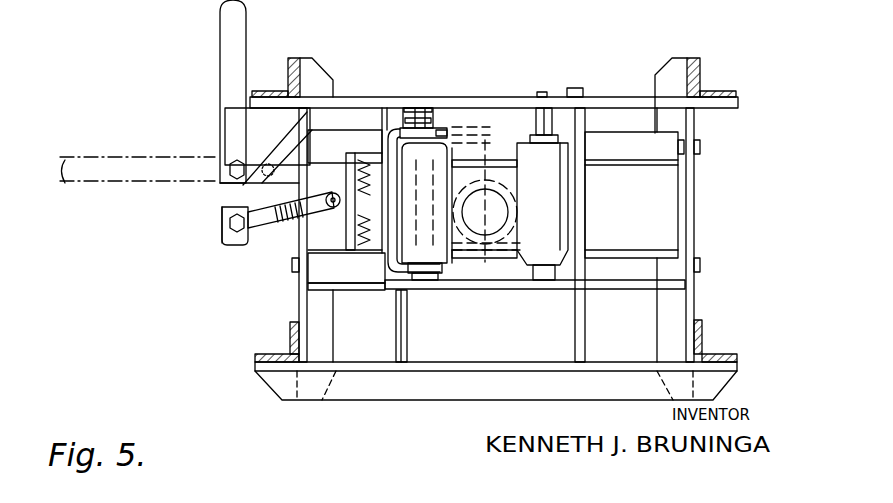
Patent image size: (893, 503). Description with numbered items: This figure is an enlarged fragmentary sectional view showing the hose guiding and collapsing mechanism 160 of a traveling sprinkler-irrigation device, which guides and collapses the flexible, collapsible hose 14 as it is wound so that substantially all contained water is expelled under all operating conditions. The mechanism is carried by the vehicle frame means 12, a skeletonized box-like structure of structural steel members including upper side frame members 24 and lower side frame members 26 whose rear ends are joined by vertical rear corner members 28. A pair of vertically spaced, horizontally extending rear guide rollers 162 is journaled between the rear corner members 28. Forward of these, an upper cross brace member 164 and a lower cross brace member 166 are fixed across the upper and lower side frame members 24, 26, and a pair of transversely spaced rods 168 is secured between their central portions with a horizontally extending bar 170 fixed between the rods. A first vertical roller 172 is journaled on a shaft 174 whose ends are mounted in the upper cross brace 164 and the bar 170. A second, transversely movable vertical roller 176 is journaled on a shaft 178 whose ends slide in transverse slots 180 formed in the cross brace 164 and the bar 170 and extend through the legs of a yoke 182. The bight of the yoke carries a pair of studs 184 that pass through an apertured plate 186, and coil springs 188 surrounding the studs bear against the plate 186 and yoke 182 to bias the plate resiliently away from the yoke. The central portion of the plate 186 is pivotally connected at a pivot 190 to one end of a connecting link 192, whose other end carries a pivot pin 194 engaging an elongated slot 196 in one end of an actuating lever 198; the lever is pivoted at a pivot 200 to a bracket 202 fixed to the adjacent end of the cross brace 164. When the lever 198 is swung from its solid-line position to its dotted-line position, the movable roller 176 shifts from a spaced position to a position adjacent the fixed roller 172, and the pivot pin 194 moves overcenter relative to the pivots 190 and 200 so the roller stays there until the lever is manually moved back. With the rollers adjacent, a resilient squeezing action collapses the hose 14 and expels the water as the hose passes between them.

The vehicle frame means 12 is at (697, 56).
The flexible collapsible hose 14 is at (522, 218).
The upper side frame members 24 is at (268, 87).
The lower side frame members 26 is at (291, 350).
The rear vertical corner members 28 is at (299, 294).
The hose guiding and collapsing mechanism 160 is at (479, 92).
The rear guide rollers 162 is at (681, 166).
The upper cross brace member 164 is at (446, 96).
The lower cross brace member 166 is at (428, 380).
The transversely spaced rods 168 is at (580, 323).
The horizontally extending bar 170 is at (480, 290).
The first vertical roller 172 is at (586, 168).
The shaft 174 is at (546, 96).
The second transversely movable vertical roller 176 is at (403, 114).
The shaft 178 is at (403, 109).
The transverse slots 180 is at (418, 290).
The yoke 182 is at (383, 258).
The studs 184 is at (358, 157).
The apertured plate 186 is at (278, 148).
The coil springs 188 is at (402, 145).
The pivot 190 is at (345, 199).
The connecting link 192 is at (294, 207).
The pivot pin 194 is at (259, 229).
The elongated slot 196 is at (220, 222).
The actuating lever 198 is at (233, 24).
The pivot 200 is at (226, 160).
The bracket 202 is at (232, 117).